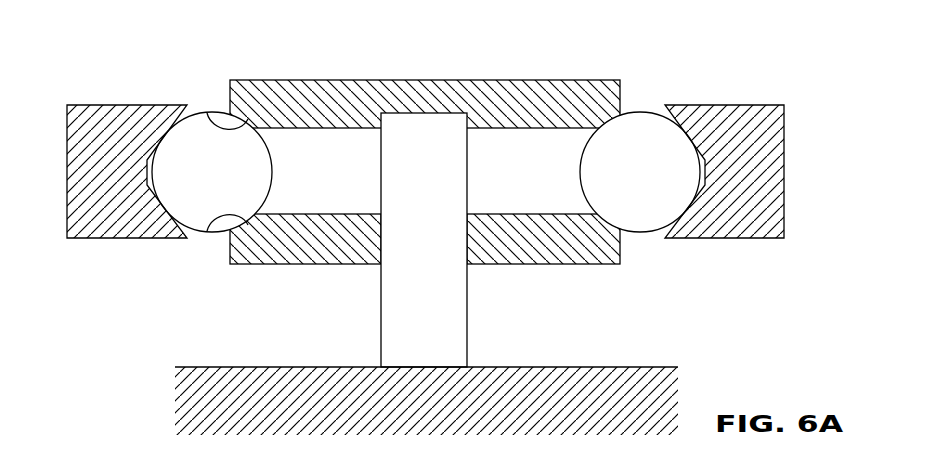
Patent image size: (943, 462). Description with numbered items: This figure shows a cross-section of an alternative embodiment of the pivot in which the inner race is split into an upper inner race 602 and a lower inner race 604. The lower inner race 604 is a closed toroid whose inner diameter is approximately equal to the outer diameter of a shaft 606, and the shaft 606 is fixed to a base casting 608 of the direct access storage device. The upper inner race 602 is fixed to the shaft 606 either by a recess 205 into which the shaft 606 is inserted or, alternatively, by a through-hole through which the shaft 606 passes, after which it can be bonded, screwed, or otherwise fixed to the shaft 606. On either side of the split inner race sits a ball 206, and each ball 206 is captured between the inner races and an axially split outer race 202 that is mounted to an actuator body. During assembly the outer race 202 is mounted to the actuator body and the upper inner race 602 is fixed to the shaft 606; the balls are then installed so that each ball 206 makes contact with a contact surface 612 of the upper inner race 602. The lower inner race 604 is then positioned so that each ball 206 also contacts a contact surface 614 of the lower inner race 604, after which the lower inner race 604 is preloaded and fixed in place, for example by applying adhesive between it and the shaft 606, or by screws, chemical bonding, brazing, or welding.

The outer race 202 is at (90, 105).
The recess 205 is at (467, 128).
The ball 206 is at (233, 185).
The upper inner race 602 is at (595, 80).
The lower inner race 604 is at (600, 265).
The shaft 606 is at (390, 318).
The base casting 608 is at (545, 367).
The contact surface 612 is at (208, 113).
The contact surface 614 is at (208, 232).